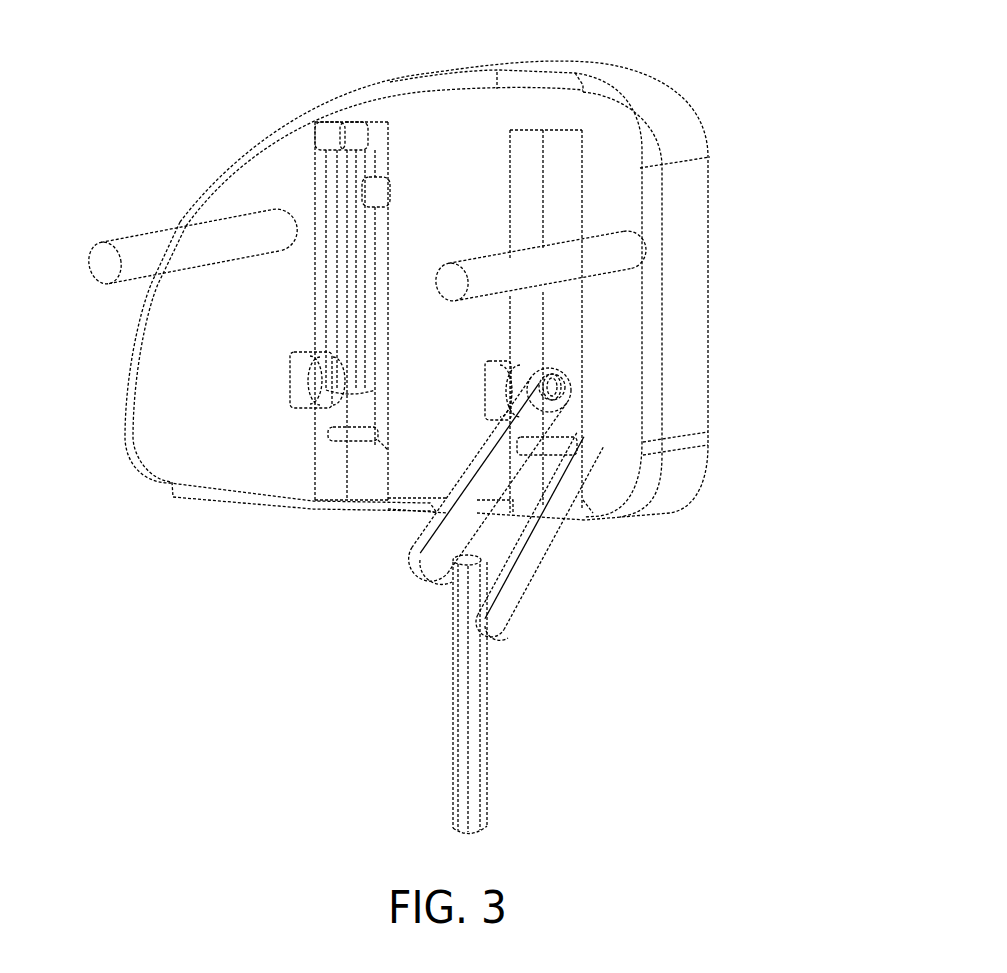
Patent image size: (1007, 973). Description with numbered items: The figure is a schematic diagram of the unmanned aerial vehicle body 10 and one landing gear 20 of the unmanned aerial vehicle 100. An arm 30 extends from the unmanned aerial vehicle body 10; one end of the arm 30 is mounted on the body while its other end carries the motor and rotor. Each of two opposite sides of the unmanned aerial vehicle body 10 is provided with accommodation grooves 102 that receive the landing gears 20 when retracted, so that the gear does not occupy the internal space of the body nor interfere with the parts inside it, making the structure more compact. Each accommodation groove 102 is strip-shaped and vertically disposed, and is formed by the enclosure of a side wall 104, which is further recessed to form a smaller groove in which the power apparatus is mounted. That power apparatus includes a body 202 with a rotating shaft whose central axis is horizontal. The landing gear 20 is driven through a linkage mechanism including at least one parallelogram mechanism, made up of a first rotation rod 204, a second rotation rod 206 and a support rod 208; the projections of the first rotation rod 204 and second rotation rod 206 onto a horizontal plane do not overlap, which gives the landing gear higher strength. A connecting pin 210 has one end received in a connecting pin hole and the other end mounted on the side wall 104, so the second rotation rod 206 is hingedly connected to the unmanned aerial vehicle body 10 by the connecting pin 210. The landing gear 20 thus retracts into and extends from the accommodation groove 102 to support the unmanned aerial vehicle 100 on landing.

The unmanned aerial vehicle 100 is at (728, 62).
The unmanned aerial vehicle body 10 is at (682, 125).
The accommodation groove 102 is at (567, 227).
The side wall 104 is at (520, 158).
The arm 30 is at (145, 240).
The landing gear 20 is at (793, 262).
The body 202 is at (503, 373).
The first rotation rod 204 is at (553, 415).
The connecting pin 210 is at (552, 437).
The second rotation rod 206 is at (590, 495).
The support rod 208 is at (477, 560).